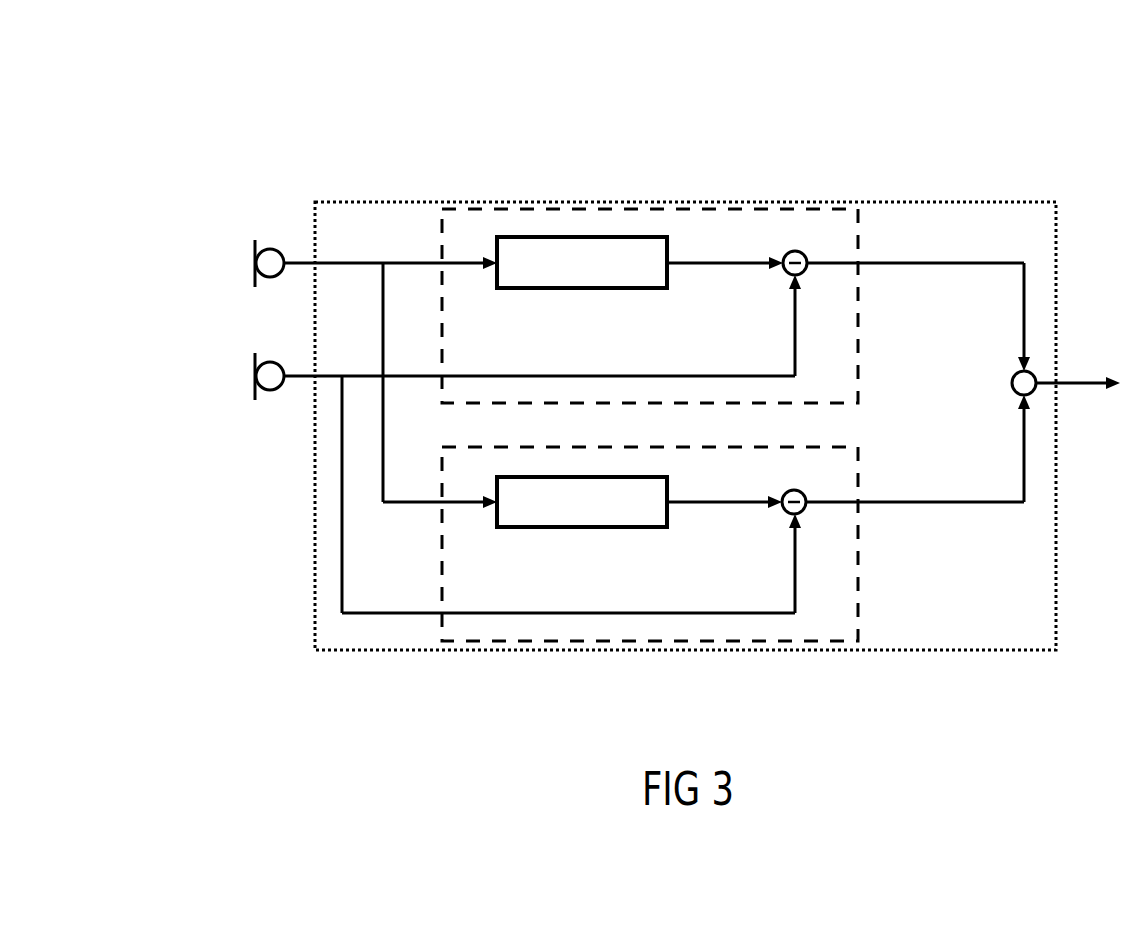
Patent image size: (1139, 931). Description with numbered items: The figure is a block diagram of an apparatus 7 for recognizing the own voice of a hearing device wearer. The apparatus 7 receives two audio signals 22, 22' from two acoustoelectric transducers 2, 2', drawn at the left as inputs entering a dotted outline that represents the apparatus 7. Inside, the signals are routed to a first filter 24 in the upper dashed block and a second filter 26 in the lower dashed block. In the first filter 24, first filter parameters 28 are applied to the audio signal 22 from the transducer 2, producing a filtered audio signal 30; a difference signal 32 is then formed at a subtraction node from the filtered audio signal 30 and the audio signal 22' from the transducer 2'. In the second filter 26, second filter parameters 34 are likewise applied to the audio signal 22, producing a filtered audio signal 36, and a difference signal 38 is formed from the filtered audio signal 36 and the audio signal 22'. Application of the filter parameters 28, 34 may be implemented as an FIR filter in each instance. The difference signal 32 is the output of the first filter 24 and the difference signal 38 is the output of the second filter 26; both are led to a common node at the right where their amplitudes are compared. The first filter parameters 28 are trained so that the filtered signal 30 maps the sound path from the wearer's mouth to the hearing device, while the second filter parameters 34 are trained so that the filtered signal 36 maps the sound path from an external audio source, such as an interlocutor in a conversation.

The apparatus 7 is at (1045, 182).
The acoustoelectric transducer 2 is at (217, 263).
The acoustoelectric transducer 2' is at (215, 376).
The audio signal 22 is at (390, 314).
The audio signal 22' is at (529, 444).
The first filter 24 is at (627, 192).
The second filter 26 is at (452, 652).
The first filter parameters 28 is at (543, 236).
The filtered audio signal 30 is at (749, 262).
The difference signal 32 is at (917, 262).
The second filter parameters 34 is at (553, 528).
The filtered audio signal 36 is at (713, 503).
The difference signal 38 is at (935, 503).